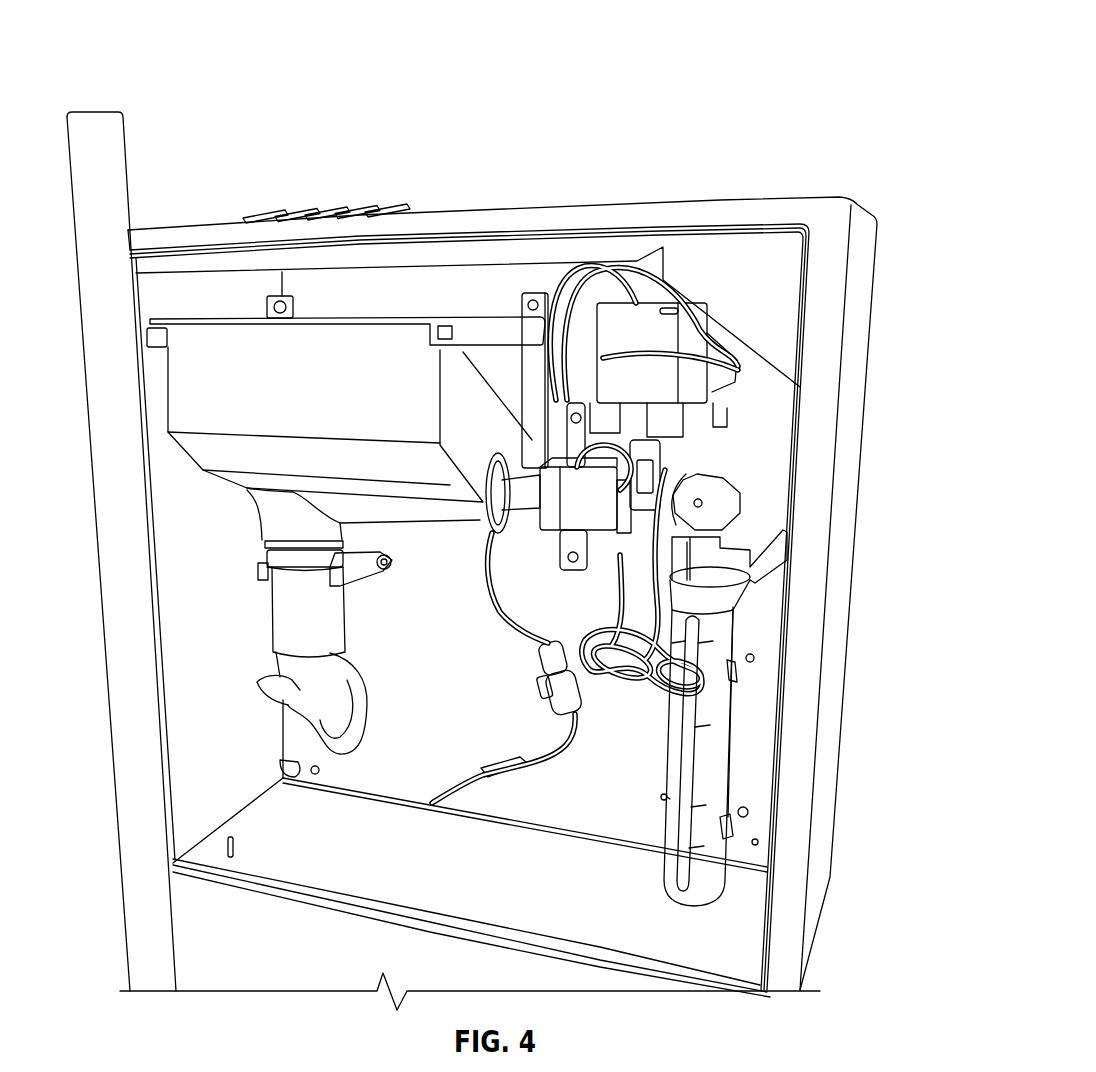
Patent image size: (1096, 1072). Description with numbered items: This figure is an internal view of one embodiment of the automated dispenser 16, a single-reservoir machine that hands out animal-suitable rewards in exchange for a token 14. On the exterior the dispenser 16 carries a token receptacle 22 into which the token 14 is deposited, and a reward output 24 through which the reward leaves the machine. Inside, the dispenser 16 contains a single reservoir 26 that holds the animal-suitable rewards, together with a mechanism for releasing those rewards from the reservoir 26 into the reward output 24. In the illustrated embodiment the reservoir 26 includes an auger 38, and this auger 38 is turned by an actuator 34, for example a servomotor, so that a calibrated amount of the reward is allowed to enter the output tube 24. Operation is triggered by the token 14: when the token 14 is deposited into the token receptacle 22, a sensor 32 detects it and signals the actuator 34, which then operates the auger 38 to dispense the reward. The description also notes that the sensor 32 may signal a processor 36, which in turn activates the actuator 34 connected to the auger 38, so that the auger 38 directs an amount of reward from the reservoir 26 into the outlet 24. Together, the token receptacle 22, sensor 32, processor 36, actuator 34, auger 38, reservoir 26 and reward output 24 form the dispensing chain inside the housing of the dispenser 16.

The token 14 is at (260, 202).
The automated dispenser 16 is at (674, 163).
The token receptacle 22 is at (718, 638).
The reward output 24 is at (290, 600).
The reservoir 26 is at (256, 381).
The sensor 32 is at (703, 503).
The actuator 34 is at (546, 463).
The processor 36 is at (677, 322).
The auger 38 is at (462, 522).